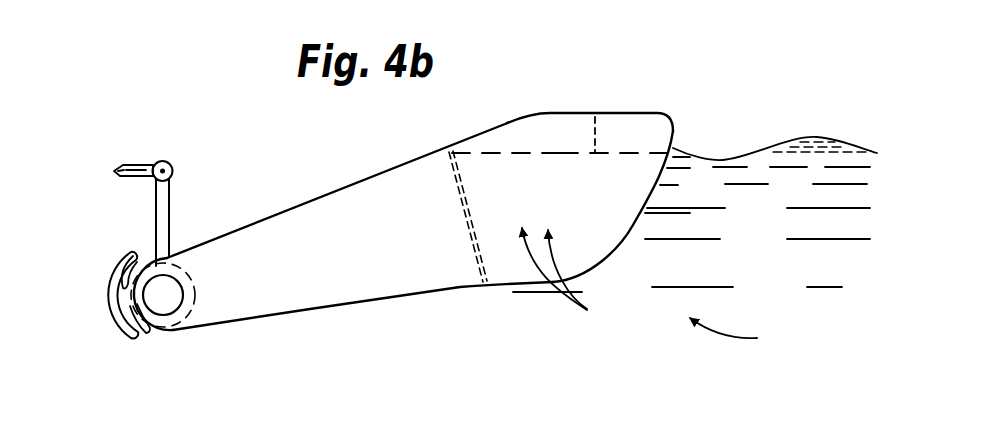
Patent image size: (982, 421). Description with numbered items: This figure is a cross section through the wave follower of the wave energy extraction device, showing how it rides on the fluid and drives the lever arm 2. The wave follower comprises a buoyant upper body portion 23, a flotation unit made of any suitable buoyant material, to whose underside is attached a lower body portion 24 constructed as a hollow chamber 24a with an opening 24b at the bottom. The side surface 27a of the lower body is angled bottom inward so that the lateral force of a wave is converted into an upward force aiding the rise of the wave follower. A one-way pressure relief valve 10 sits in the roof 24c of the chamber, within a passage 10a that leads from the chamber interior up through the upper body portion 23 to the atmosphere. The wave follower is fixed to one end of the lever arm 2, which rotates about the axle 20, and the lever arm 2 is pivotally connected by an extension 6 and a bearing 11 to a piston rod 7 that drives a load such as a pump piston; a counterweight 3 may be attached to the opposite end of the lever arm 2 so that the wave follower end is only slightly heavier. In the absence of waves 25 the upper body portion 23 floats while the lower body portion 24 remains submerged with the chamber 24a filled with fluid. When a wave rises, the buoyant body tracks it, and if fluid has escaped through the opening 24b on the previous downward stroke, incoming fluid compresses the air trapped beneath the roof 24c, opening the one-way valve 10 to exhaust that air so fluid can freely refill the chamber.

The lever arm 2 is at (403, 211).
The counterweight 3 is at (110, 282).
The extension 6 is at (168, 212).
The piston rod 7 is at (138, 164).
The pressure relief valve 10 is at (600, 150).
The passage 10a is at (602, 120).
The bearing 11 is at (173, 172).
The axle 20 is at (158, 287).
The upper body portion 23 is at (562, 133).
The lower body portion 24 is at (604, 222).
The hollow chamber 24a is at (565, 281).
The opening 24b is at (573, 274).
The roof 24c is at (513, 154).
The waves 25 is at (818, 137).
The side surface 27a is at (647, 213).